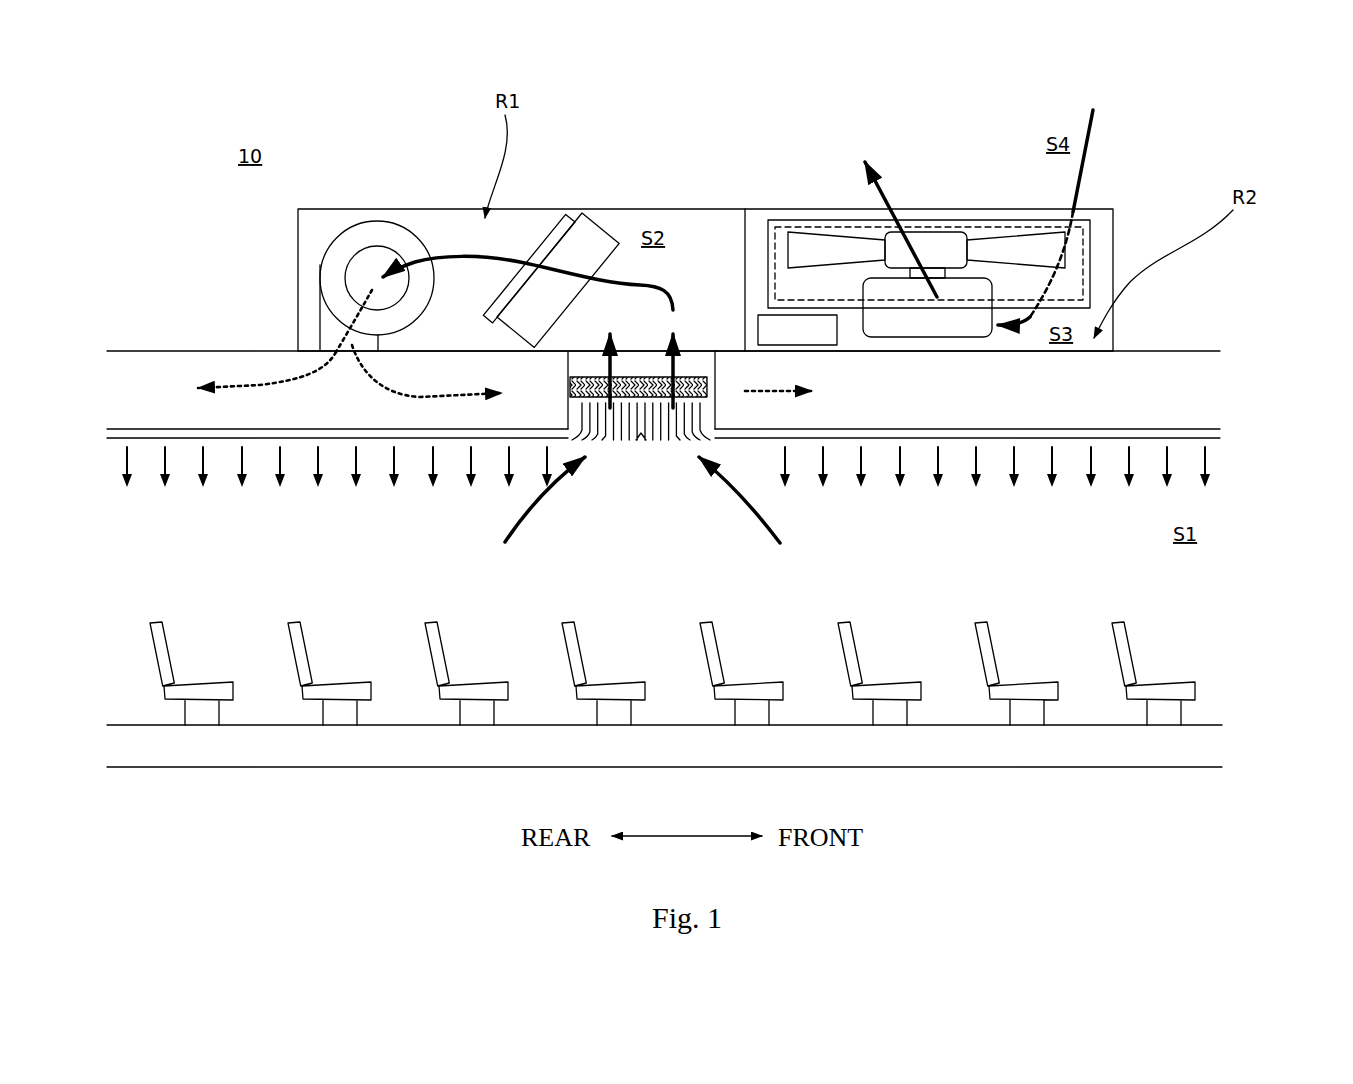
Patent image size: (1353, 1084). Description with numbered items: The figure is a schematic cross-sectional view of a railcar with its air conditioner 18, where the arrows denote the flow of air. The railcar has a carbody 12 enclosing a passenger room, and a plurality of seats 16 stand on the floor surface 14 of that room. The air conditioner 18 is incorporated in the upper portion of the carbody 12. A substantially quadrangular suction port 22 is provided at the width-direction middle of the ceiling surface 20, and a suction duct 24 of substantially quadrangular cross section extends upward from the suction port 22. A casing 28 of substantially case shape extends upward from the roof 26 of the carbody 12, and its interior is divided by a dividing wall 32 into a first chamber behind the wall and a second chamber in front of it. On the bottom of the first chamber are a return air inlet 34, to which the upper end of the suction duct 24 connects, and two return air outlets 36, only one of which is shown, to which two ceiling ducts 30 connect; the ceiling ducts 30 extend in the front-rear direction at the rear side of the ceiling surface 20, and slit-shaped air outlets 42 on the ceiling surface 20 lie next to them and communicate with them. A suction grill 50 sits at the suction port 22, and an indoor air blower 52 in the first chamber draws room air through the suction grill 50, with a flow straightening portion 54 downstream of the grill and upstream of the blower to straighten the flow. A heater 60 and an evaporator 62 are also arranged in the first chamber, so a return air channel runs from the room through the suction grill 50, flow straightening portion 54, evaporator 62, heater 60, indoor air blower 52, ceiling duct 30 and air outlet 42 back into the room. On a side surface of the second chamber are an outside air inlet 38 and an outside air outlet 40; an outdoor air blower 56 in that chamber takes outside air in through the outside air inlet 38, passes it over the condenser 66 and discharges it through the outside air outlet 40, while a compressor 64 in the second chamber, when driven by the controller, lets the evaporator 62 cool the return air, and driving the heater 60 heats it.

The carbody 12 is at (220, 345).
The floor surface 14 is at (1198, 725).
The seat 16 is at (988, 647).
The air conditioner 18 is at (353, 205).
The ceiling surface 20 is at (1210, 440).
The suction port 22 is at (640, 456).
The suction duct 24 is at (566, 398).
The roof 26 is at (1153, 351).
The casing 28 is at (1102, 209).
The ceiling duct 30 is at (1198, 373).
The dividing wall 32 is at (748, 230).
The return air inlet 34 is at (596, 351).
The return air outlet 36 is at (338, 356).
The outside air inlet 38 is at (1092, 257).
The outside air outlet 40 is at (993, 218).
The air outlet 42 is at (1120, 428).
The suction grill 50 is at (677, 456).
The indoor air blower 52 is at (401, 235).
The flow straightening portion 54 is at (650, 367).
The outdoor air blower 56 is at (940, 240).
The heater 60 is at (543, 228).
The evaporator 62 is at (605, 240).
The compressor 64 is at (760, 332).
The condenser 66 is at (1075, 247).